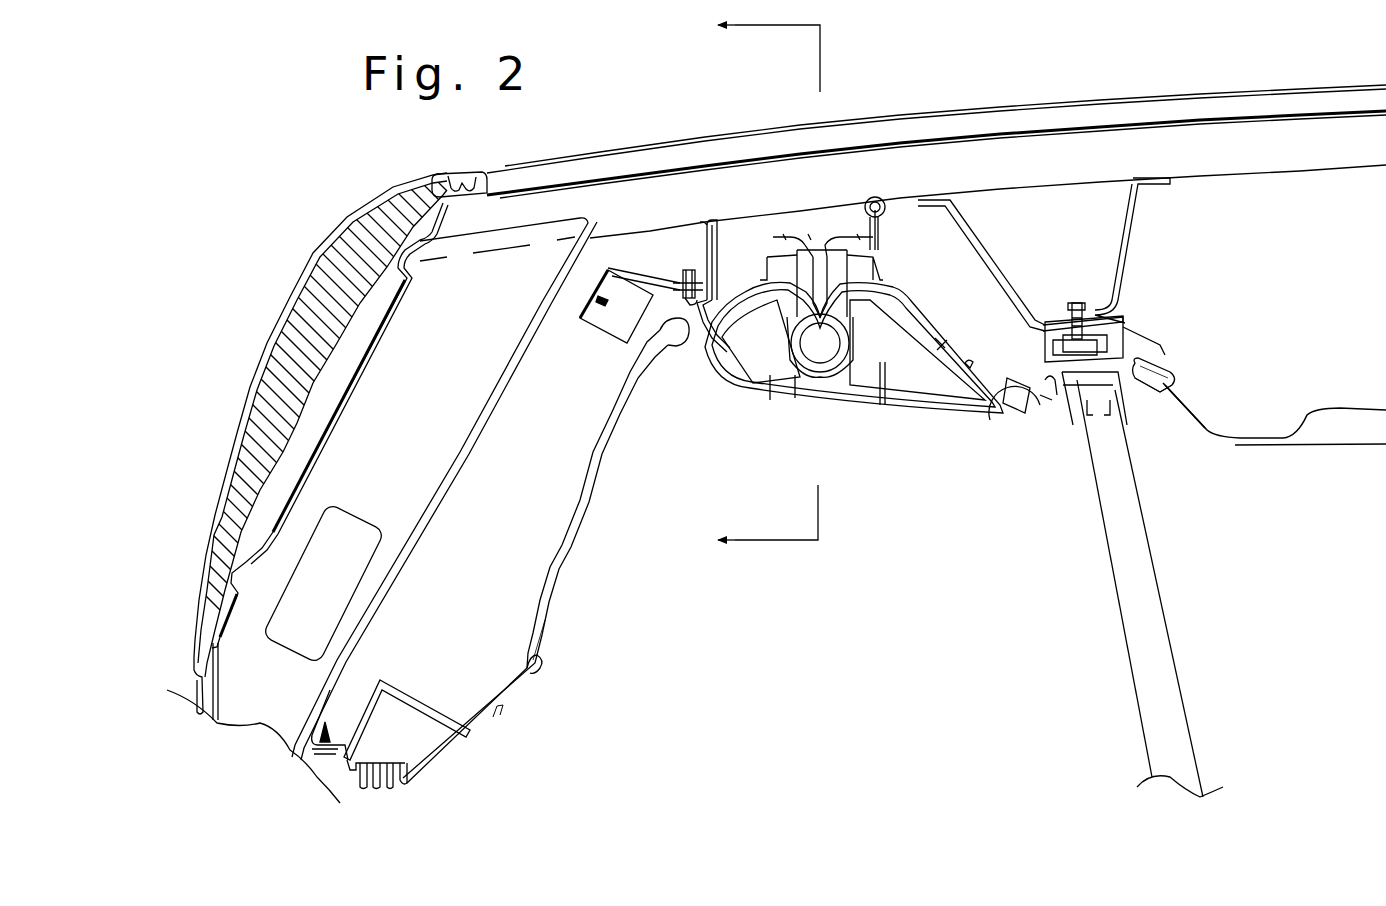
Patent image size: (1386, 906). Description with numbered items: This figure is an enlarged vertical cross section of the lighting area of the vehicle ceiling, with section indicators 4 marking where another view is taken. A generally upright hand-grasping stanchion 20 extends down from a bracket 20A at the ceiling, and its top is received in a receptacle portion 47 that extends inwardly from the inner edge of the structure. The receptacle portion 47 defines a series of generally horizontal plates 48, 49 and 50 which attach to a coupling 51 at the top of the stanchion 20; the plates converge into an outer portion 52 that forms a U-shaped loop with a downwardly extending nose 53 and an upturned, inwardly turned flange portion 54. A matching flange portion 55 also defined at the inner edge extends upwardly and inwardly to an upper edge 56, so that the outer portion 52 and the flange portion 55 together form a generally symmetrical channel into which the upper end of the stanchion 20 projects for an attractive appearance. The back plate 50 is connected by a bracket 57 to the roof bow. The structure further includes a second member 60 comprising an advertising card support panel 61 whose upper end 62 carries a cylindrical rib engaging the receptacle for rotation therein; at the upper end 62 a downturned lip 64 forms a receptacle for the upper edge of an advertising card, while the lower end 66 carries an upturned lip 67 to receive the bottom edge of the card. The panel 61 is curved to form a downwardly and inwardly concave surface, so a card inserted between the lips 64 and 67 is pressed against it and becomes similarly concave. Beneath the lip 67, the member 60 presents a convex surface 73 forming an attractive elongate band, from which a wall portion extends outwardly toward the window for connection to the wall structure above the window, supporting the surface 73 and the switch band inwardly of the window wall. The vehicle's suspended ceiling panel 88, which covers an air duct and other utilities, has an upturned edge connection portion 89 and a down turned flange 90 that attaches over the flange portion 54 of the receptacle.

The section line 4- 4 is at (790, 283).
The stanchion 20 is at (1158, 595).
The bracket 20A is at (1145, 330).
The receptacle portion 47 is at (1033, 345).
The plate 48 is at (1093, 387).
The plate 49 is at (1070, 395).
The back plate 50 is at (1060, 315).
The coupling 51 is at (1080, 403).
The outer portion 52 is at (1172, 365).
The nose 53 is at (1170, 390).
The flange portion 54 is at (1143, 390).
The flange portion 55 is at (1047, 398).
The upper edge 56 is at (995, 396).
The bracket 57 is at (985, 243).
The second member 60 is at (570, 566).
The advertising card support panel 61 is at (588, 472).
The upper end 62 is at (657, 335).
The downturned lip 64 is at (683, 345).
The lower end 66 is at (512, 634).
The upturned lip 67 is at (540, 660).
The convex surface 73 is at (516, 685).
The suspended ceiling panel 88 is at (1320, 443).
The upturned edge connection portion 89 is at (1210, 432).
The down turned flange 90 is at (1148, 358).